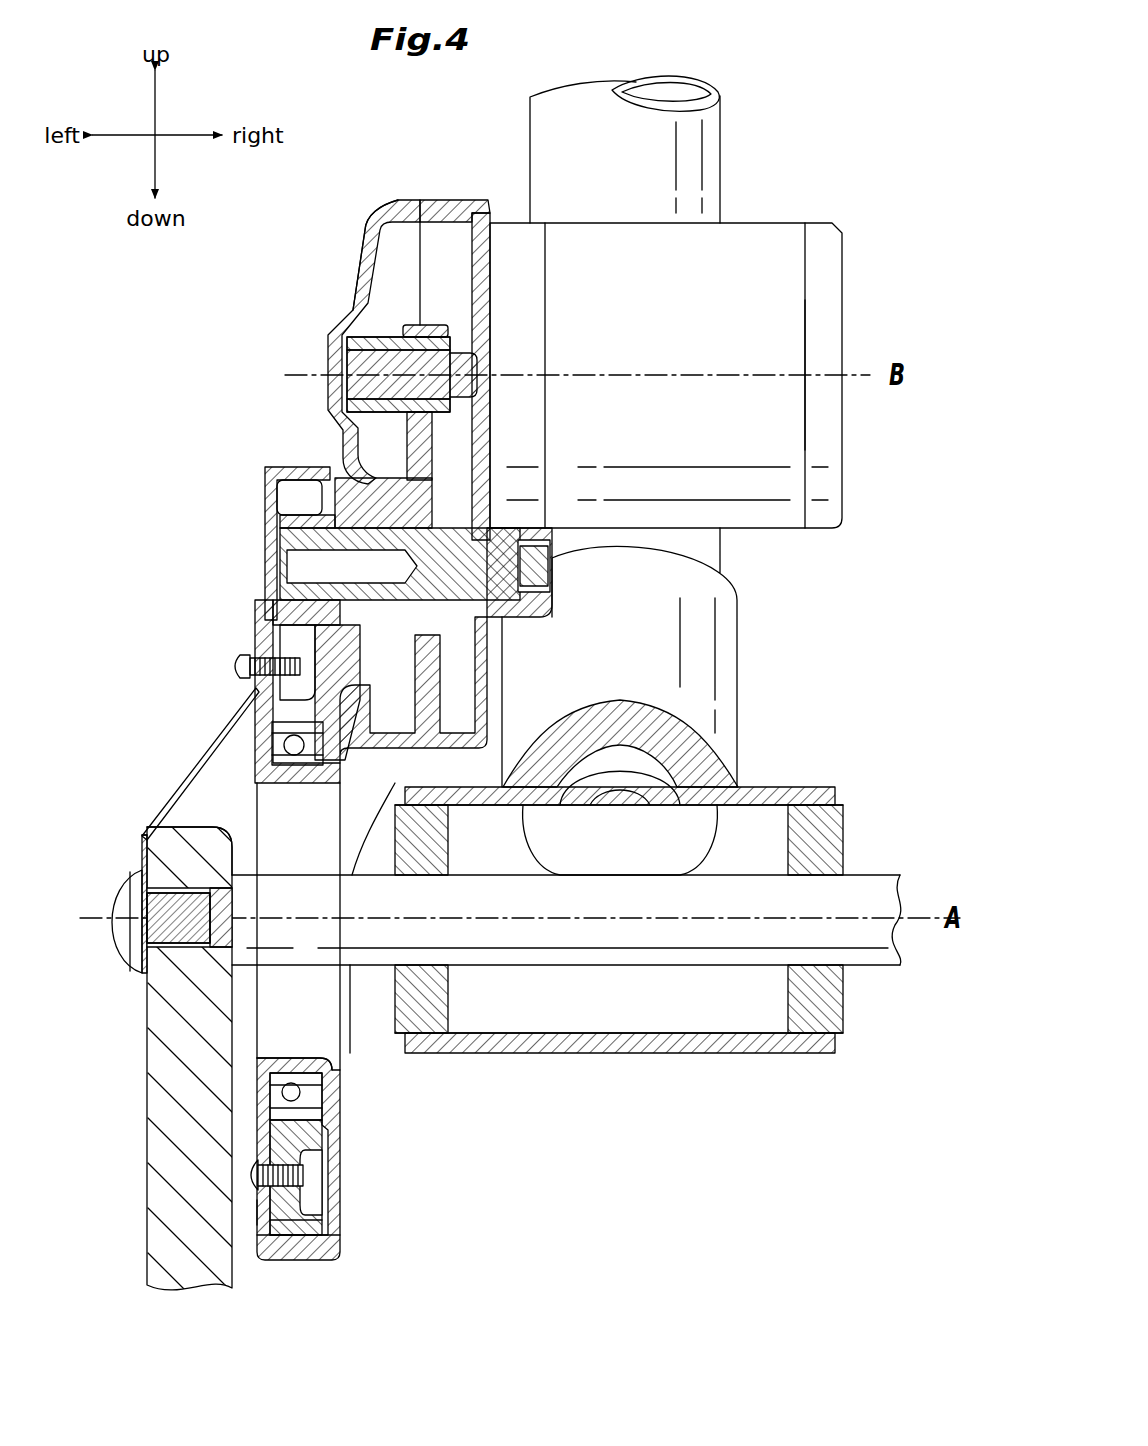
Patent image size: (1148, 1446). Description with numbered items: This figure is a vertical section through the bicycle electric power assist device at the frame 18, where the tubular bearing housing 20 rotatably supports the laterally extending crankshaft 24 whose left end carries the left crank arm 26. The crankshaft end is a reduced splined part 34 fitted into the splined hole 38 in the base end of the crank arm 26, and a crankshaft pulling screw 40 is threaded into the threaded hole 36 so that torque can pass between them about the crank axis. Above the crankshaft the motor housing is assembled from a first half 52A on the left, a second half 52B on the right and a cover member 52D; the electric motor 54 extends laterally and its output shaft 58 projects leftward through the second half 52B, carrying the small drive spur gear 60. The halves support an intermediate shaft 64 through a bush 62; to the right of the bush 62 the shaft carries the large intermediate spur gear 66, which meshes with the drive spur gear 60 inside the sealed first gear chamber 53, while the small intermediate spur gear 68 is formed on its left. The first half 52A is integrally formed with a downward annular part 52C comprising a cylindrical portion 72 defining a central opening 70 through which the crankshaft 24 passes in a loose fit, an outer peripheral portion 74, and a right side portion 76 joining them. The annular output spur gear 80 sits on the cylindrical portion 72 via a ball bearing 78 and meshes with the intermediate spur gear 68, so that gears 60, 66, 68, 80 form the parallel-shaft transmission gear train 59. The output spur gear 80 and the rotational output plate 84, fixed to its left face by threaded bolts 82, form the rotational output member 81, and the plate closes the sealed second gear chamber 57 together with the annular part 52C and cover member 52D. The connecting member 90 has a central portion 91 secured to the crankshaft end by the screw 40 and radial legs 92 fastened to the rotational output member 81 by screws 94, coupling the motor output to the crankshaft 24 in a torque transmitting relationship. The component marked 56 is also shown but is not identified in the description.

The frame 18 is at (708, 166).
The tubular bearing housing 20 is at (778, 786).
The crankshaft 24 is at (872, 975).
The left crank arm 26 is at (160, 1160).
The splined part 34 is at (218, 897).
The threaded hole 36 is at (190, 940).
The splined hole 38 is at (205, 960).
The screw 40 is at (125, 903).
The first half 52A is at (392, 206).
The second half 52B is at (446, 212).
The annular part 52C is at (342, 1240).
The cover member 52D is at (268, 540).
The first gear chamber 53 is at (394, 275).
The electric motor 54 is at (822, 356).
The motor body 56 is at (790, 430).
The second gear chamber 57 is at (352, 500).
The output shaft 58 is at (357, 375).
The transmission gear train 59 is at (303, 493).
The drive spur gear 60 is at (432, 330).
The bush 62 is at (345, 478).
The intermediate shaft 64 is at (506, 620).
The intermediate spur gear 66 is at (442, 718).
The intermediate spur gear 68 is at (292, 519).
The central opening 70 is at (318, 1036).
The cylindrical portion 72 is at (322, 1055).
The outer peripheral portion 74 is at (290, 1262).
The right side portion 76 is at (342, 1195).
The ball bearing 78 is at (300, 1093).
The output spur gear 80 is at (262, 612).
The rotational output member 81 is at (252, 1212).
The threaded bolts 82 is at (310, 1178).
The rotational output plate 84 is at (268, 1228).
The connecting member 90 is at (143, 834).
The central portion 91 is at (143, 858).
The legs 92 is at (218, 733).
The screw 94 is at (244, 665).